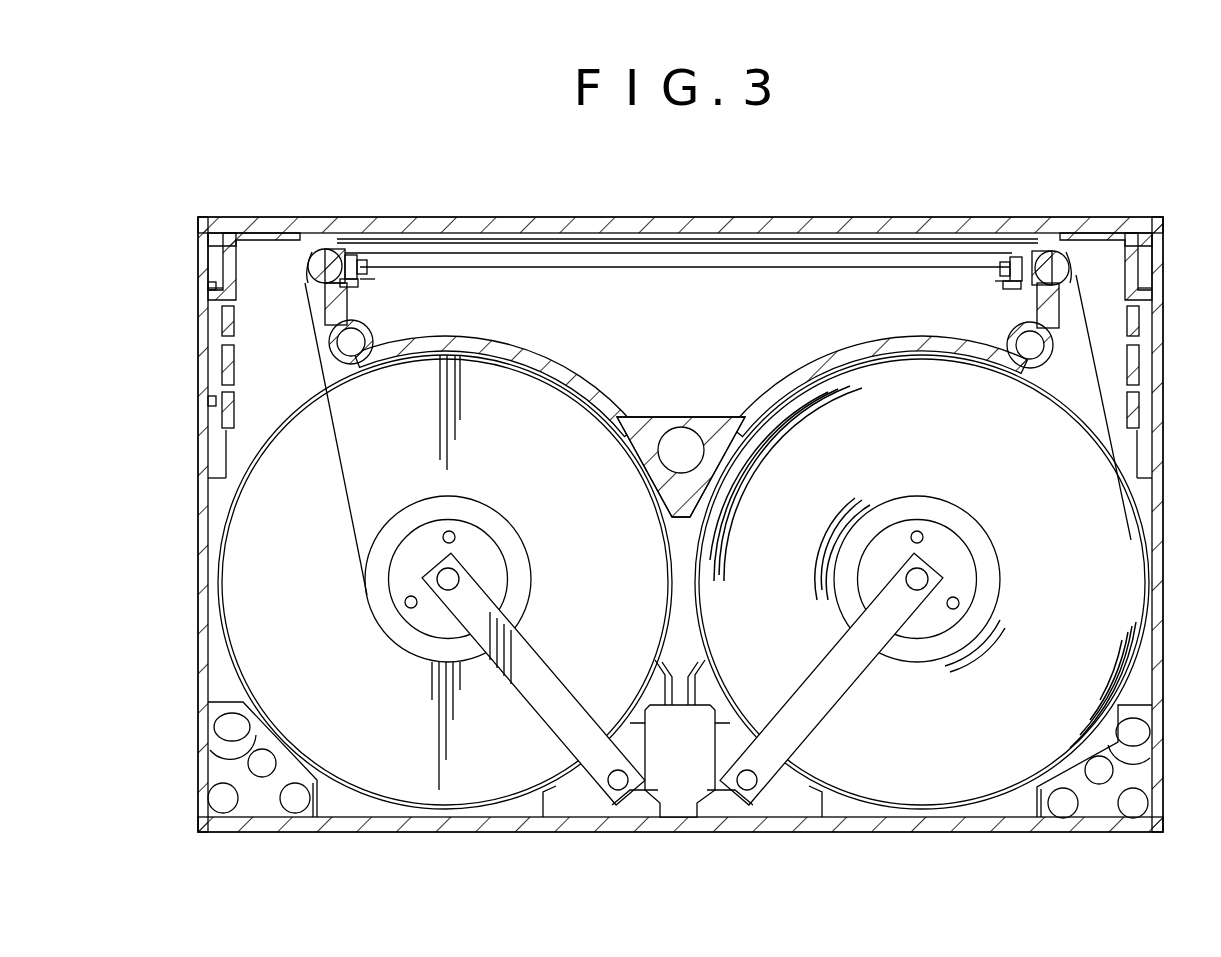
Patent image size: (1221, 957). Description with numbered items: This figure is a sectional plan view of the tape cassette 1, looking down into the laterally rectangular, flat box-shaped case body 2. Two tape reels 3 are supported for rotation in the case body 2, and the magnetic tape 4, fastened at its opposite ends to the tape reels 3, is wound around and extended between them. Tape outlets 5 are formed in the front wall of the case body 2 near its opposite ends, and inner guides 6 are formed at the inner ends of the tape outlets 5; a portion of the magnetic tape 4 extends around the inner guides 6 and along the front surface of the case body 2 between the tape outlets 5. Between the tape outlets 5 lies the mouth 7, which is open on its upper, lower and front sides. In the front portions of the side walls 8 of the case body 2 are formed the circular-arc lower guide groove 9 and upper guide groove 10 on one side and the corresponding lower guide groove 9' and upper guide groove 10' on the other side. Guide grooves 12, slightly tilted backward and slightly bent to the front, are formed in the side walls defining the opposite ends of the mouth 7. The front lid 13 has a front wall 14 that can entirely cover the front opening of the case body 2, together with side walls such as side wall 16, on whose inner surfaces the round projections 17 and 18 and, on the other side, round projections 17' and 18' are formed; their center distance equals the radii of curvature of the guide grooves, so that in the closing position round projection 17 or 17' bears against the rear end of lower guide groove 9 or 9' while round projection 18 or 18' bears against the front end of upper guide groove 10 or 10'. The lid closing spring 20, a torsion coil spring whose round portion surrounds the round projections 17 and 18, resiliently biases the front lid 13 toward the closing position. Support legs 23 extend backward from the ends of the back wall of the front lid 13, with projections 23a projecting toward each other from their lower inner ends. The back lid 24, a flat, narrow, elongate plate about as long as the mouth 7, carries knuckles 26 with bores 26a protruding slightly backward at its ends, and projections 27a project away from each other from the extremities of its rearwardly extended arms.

The tape cassette 1 is at (190, 210).
The case body 2 is at (198, 575).
The tape reels 3 is at (458, 795).
The magnetic tape 4 is at (700, 226).
The tape outlets 5 is at (262, 233).
The inner guides 6 is at (318, 300).
The mouth 7 is at (700, 327).
The side walls 8 is at (205, 520).
The lower guide groove 9 is at (243, 406).
The lower guide groove 9' is at (1118, 390).
The upper guide groove 10 is at (255, 321).
The upper guide groove 10' is at (1115, 312).
The guide grooves 12 is at (308, 275).
The front lid 13 is at (888, 222).
The front wall 14 is at (980, 236).
The side wall 16 is at (212, 266).
The round projection 17 is at (258, 369).
The round projection 17' is at (1099, 374).
The round projection 18 is at (248, 293).
The round projection 18' is at (1179, 315).
The lid closing spring 20 is at (214, 286).
The support legs 23 is at (342, 292).
The projections 23a is at (372, 282).
The back lid 24 is at (658, 263).
The knuckles 26 is at (372, 272).
The bores 26a is at (375, 264).
The projections 27a is at (318, 250).